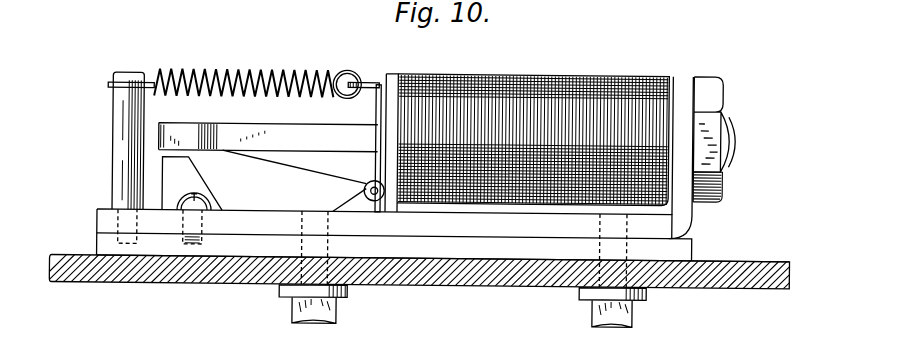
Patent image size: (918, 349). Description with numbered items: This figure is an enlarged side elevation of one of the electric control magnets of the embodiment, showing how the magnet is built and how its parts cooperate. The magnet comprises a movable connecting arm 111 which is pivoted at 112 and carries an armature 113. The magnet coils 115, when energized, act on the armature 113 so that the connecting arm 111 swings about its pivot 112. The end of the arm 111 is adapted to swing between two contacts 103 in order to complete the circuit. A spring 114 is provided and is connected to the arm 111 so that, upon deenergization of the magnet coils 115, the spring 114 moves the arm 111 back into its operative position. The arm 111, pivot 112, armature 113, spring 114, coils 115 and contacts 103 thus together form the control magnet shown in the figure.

The contacts 103 is at (170, 174).
The movable connecting arm 111 is at (252, 138).
The pivot 112 is at (371, 199).
The armature 113 is at (382, 112).
The spring 114 is at (223, 70).
The magnet coils 115 is at (543, 76).